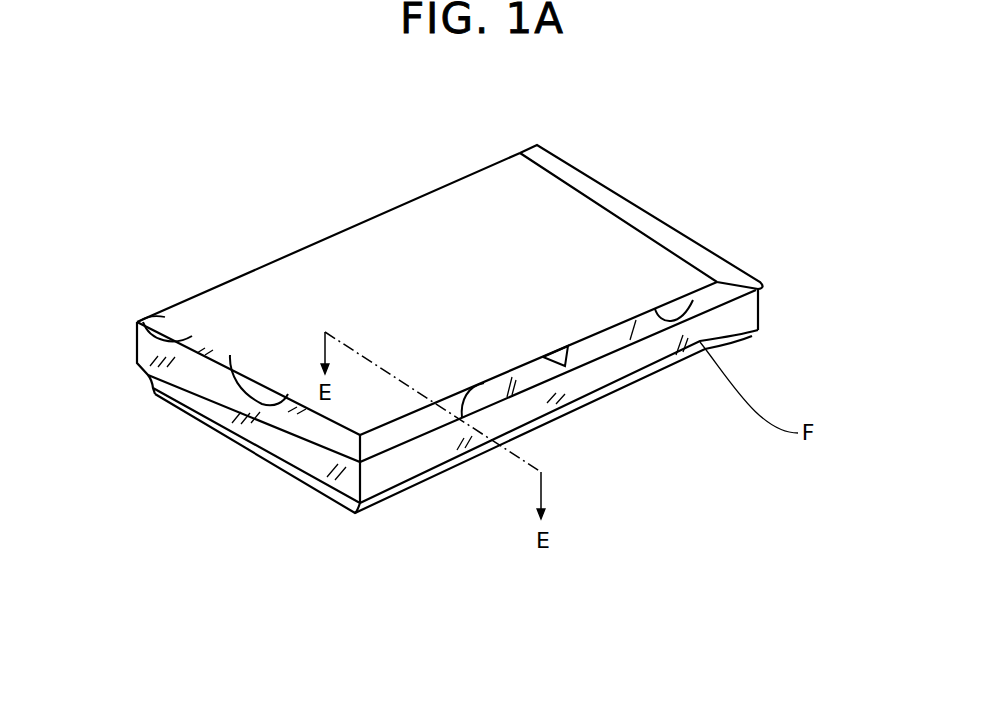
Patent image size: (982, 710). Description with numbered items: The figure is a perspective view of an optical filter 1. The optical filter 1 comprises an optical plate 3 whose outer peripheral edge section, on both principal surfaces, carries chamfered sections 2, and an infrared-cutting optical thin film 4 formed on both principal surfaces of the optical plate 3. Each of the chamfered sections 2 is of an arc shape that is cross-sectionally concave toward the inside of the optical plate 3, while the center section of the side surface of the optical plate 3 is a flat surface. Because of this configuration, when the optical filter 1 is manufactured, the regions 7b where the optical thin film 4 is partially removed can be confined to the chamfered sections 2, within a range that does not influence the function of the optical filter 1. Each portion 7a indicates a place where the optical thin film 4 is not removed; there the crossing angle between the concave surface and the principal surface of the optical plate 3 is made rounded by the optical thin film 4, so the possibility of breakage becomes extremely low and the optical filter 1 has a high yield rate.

The optical filter 1 is at (157, 414).
The chamfered sections 2 is at (372, 213).
The optical plate 3 is at (745, 317).
The infrared-cutting optical thin film 4 is at (500, 228).
The portion where the optical thin film is not removed 7a is at (750, 335).
The region where the optical thin film is partially removed 7b is at (592, 405).